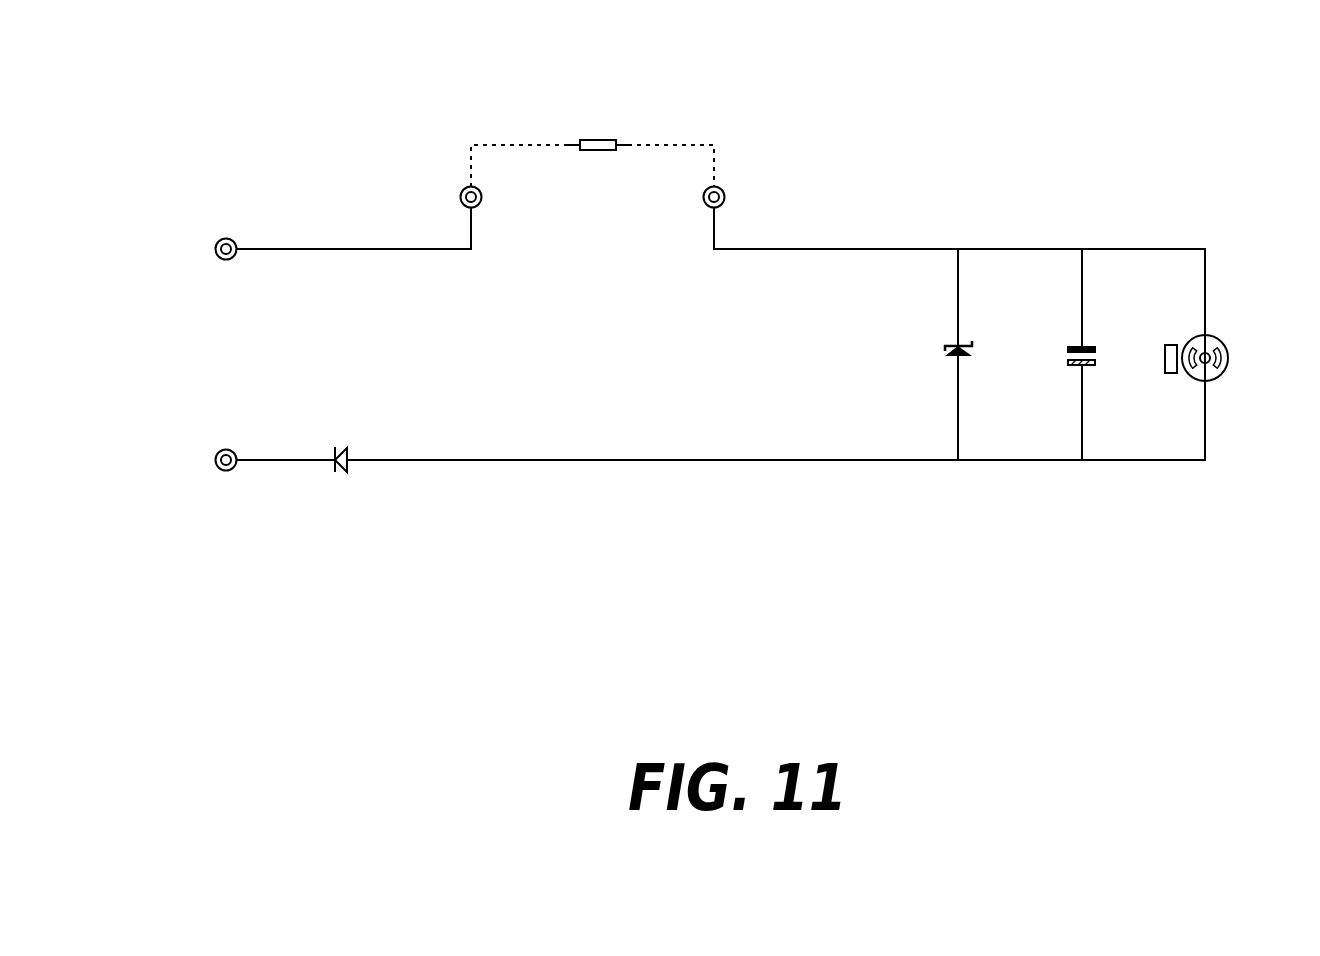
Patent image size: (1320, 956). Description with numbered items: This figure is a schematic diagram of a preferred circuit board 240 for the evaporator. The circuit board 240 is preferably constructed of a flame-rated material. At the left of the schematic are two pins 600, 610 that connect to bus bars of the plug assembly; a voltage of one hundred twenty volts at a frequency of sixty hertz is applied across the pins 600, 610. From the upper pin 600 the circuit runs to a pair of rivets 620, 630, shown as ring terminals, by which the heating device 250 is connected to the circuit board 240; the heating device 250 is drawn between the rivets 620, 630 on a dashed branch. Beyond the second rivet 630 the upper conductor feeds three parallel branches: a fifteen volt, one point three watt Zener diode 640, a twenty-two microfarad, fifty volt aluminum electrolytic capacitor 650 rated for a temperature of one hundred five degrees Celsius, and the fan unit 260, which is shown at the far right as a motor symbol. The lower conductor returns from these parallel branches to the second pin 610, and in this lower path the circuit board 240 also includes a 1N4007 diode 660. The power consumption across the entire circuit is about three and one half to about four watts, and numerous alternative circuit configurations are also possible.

The circuit board 240 is at (273, 136).
The heating device 250 is at (608, 138).
The fan unit 260 is at (1220, 340).
The pin 600 is at (216, 243).
The pin 610 is at (215, 455).
The rivet 620 is at (459, 196).
The rivet 630 is at (727, 197).
The Zener diode 640 is at (947, 347).
The aluminum electrolytic capacitor 650 is at (1095, 347).
The diode 660 is at (345, 468).